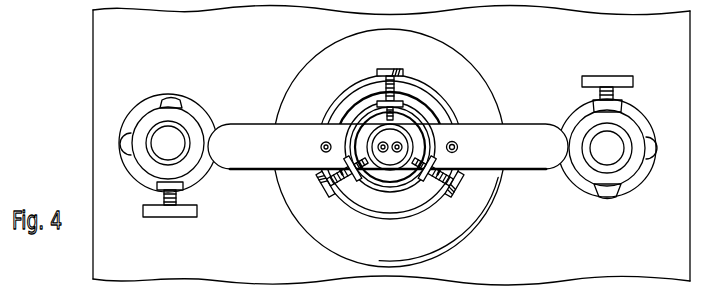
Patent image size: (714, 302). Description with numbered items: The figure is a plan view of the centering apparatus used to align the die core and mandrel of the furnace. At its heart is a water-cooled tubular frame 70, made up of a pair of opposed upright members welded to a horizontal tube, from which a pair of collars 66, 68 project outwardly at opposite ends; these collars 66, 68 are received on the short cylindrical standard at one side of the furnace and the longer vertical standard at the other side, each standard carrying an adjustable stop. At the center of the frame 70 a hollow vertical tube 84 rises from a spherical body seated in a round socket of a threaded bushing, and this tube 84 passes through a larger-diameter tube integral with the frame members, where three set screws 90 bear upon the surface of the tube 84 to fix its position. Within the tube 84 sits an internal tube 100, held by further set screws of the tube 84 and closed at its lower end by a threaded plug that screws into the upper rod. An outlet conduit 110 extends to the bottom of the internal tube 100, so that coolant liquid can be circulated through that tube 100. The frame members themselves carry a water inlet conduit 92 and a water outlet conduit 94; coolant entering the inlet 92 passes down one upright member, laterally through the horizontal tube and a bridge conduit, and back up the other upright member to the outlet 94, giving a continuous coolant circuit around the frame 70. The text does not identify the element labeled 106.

The collar 66 is at (188, 173).
The collar 68 is at (623, 178).
The water-cooled tubular frame 70 is at (537, 156).
The hollow vertical tube 84 is at (352, 128).
The set screws 90 is at (326, 194).
The water inlet conduit 92 is at (322, 150).
The water outlet conduit 94 is at (457, 152).
The internal tube 100 is at (433, 131).
The center pin 106 is at (396, 154).
The outlet conduit 110 is at (383, 153).